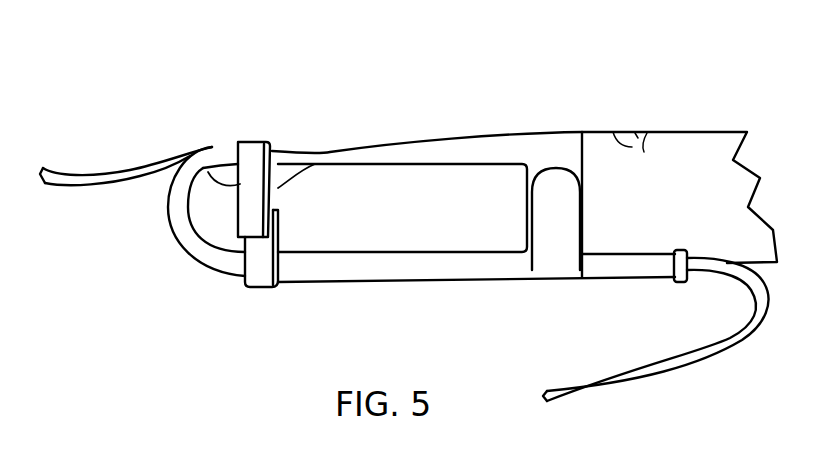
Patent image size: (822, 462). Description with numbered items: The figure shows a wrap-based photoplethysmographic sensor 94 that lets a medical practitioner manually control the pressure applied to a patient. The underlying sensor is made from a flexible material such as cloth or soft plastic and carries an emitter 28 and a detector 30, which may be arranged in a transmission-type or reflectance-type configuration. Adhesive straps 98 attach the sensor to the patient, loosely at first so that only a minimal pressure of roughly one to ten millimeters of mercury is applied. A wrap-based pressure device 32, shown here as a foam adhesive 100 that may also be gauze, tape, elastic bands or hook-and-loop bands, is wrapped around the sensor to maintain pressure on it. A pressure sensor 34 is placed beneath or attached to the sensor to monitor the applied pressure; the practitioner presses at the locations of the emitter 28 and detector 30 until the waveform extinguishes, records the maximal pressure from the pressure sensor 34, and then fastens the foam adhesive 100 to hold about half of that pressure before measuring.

The wrap-based photoplethysmographic sensor 94 is at (381, 60).
The adhesive straps 98 is at (217, 155).
The foam adhesive 100 is at (257, 180).
The wrap-based pressure device 32 is at (258, 131).
The emitter 28 is at (242, 278).
The detector 30 is at (284, 268).
The pressure sensor 34 is at (628, 270).